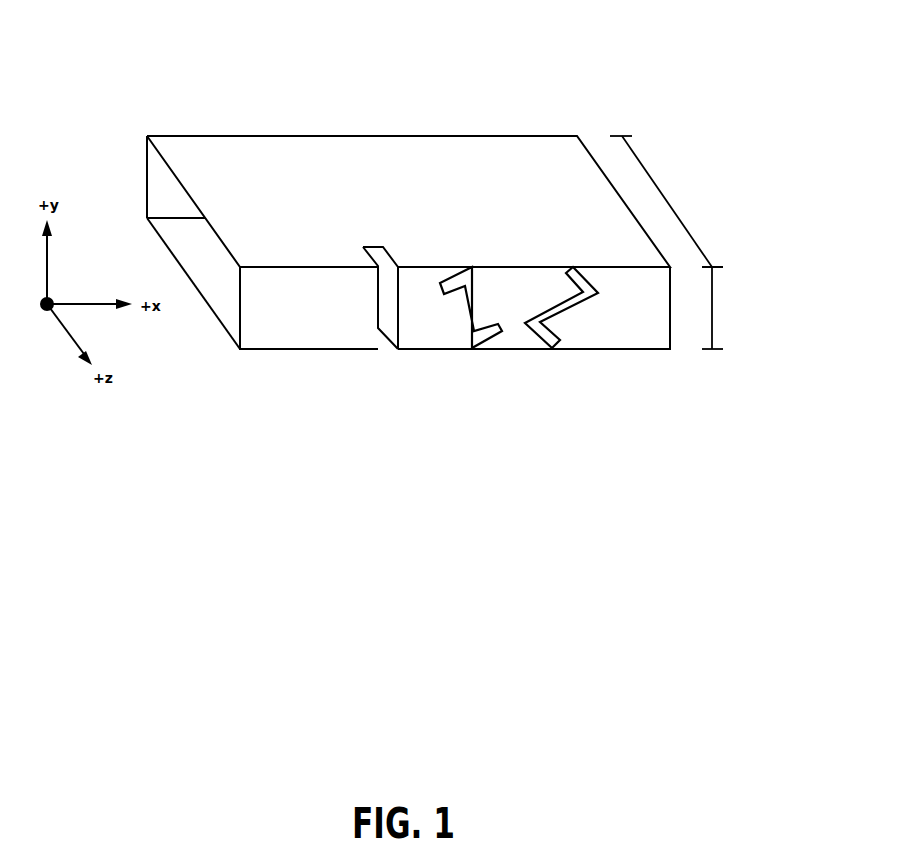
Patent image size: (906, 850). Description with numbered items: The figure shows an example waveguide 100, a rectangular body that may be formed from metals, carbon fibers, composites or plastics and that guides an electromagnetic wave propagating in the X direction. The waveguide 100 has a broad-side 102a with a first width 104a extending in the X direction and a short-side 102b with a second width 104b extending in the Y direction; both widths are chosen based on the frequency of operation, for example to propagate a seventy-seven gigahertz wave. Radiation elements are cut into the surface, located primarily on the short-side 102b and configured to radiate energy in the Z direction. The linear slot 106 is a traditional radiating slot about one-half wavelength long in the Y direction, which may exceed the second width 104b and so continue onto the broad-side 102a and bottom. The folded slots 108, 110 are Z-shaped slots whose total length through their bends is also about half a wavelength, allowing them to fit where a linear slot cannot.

The waveguide 100 is at (197, 63).
The broad-side 102a is at (282, 257).
The short-side 102b is at (282, 337).
The first width 104a is at (665, 195).
The second width 104b is at (712, 312).
The linear slot 106 is at (388, 346).
The folded slot 108 is at (484, 343).
The folded slot 110 is at (545, 345).